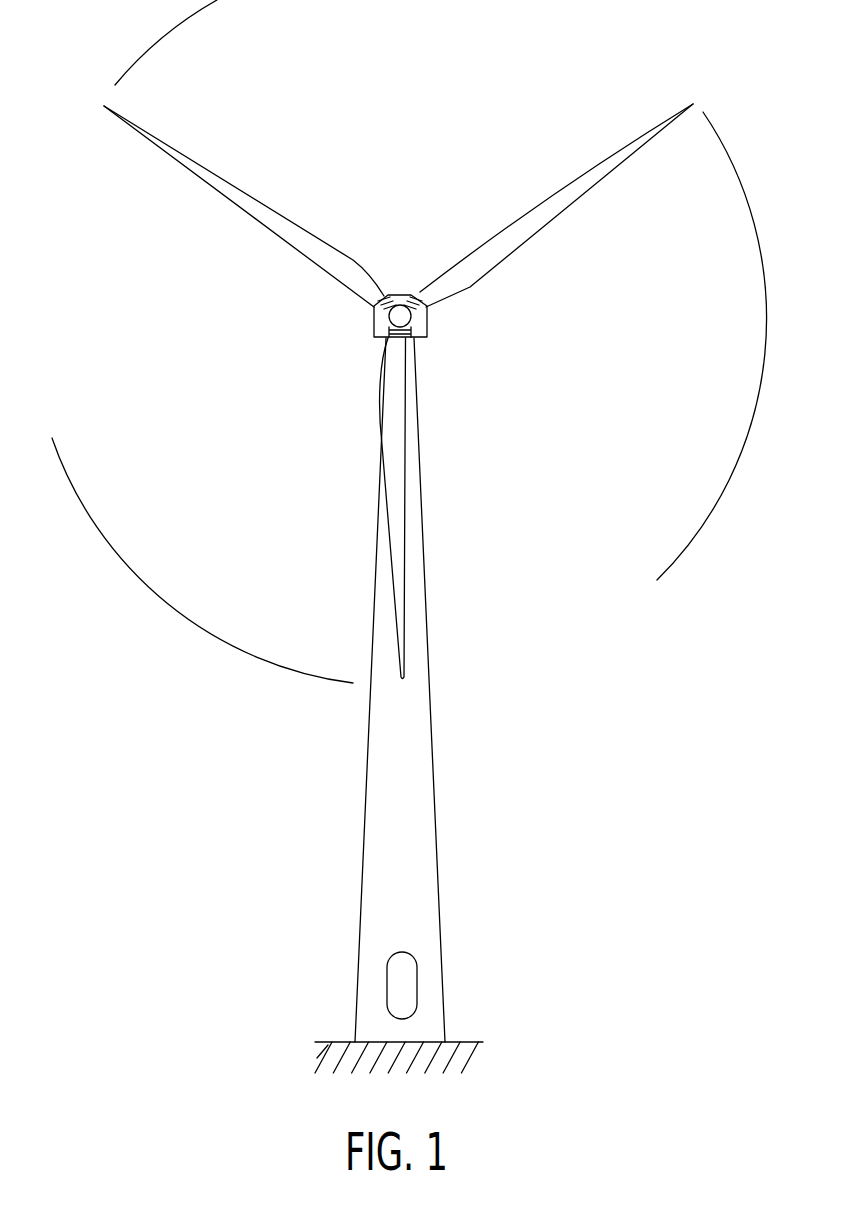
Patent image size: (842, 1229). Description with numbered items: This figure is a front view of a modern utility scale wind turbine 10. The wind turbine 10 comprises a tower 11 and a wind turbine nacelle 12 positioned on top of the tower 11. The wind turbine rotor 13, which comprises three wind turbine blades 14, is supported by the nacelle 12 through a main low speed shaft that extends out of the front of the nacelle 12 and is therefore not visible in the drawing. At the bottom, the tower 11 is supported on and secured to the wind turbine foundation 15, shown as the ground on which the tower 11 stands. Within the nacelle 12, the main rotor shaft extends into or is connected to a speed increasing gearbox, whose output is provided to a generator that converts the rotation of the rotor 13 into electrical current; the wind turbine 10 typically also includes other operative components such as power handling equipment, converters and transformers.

The wind turbine 10 is at (314, 904).
The tower 11 is at (418, 775).
The wind turbine nacelle 12 is at (427, 325).
The wind turbine rotor 13 is at (389, 323).
The wind turbine blades 14 is at (398, 545).
The wind turbine foundation 15 is at (345, 1042).